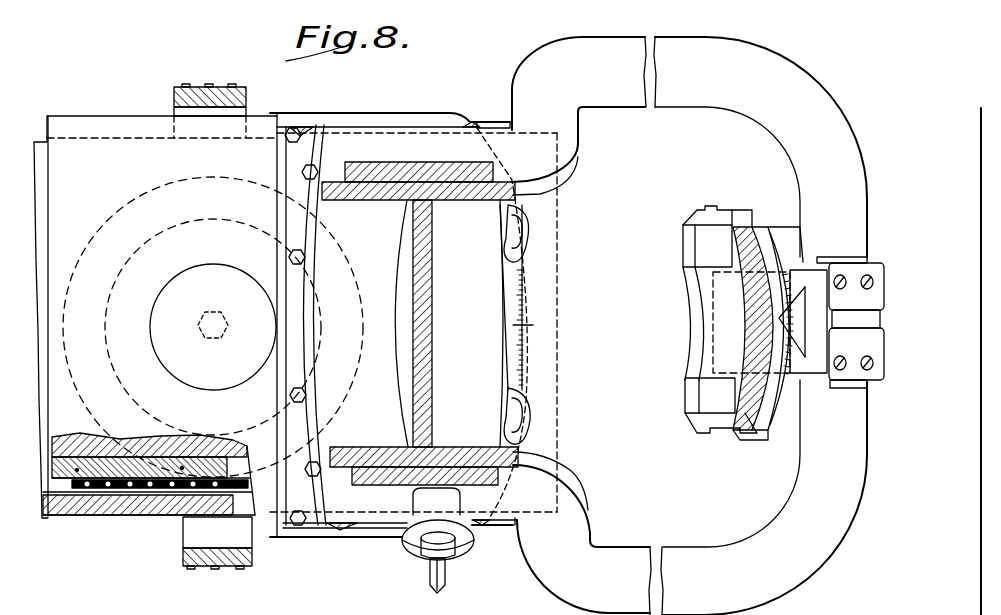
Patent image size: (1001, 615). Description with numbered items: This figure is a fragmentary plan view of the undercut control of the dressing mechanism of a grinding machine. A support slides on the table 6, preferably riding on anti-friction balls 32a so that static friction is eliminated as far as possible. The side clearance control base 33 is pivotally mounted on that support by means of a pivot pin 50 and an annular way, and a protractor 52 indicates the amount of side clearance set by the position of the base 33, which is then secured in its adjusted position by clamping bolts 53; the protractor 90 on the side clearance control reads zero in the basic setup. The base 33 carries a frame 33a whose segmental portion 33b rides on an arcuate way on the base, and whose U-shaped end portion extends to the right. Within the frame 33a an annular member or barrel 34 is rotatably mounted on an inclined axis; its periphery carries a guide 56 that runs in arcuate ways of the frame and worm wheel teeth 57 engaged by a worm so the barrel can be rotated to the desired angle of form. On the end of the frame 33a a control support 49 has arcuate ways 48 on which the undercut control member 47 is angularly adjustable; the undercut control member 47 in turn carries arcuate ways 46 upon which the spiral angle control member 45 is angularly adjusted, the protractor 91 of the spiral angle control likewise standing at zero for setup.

The table 6 is at (67, 514).
The balls 32a is at (88, 488).
The side clearance control base 33 is at (268, 500).
The frame 33a is at (553, 582).
The segmental portion 33b is at (390, 528).
The barrel 34 is at (388, 478).
The spiral angle control member 45 is at (757, 322).
The arcuate ways 46 is at (710, 213).
The undercut control member 47 is at (755, 225).
The arcuate ways 48 is at (803, 321).
The control support 49 is at (813, 368).
The pivot pin 50 is at (224, 310).
The protractor 52 is at (527, 300).
The clamping bolts 53 is at (527, 223).
The guide 56 is at (483, 475).
The worm wheel teeth 57 is at (428, 168).
The protractor 90 is at (532, 351).
The protractor 91 is at (781, 272).